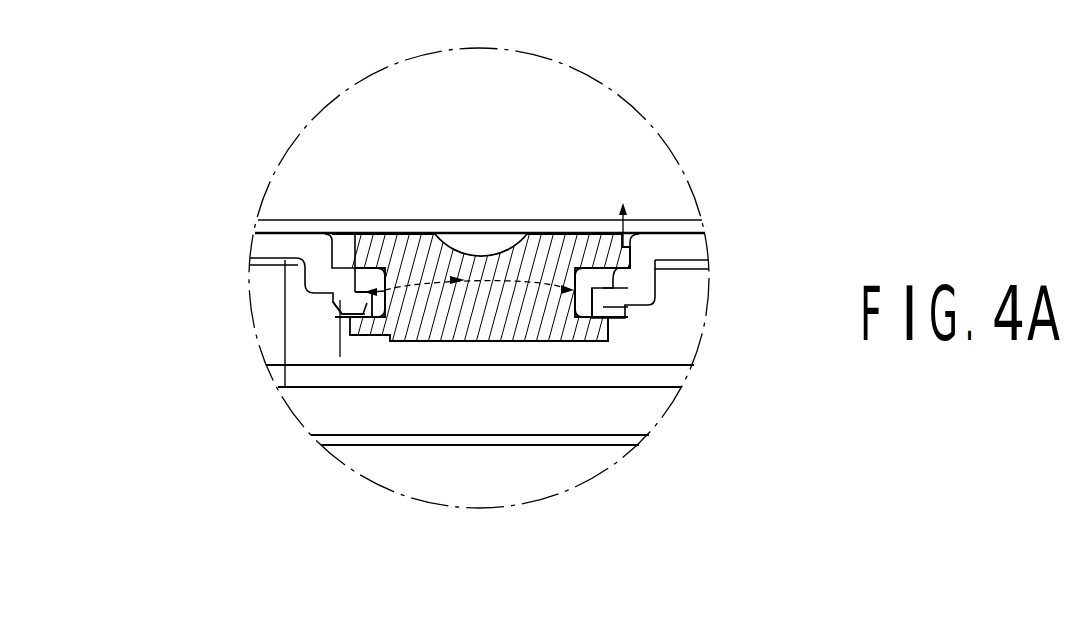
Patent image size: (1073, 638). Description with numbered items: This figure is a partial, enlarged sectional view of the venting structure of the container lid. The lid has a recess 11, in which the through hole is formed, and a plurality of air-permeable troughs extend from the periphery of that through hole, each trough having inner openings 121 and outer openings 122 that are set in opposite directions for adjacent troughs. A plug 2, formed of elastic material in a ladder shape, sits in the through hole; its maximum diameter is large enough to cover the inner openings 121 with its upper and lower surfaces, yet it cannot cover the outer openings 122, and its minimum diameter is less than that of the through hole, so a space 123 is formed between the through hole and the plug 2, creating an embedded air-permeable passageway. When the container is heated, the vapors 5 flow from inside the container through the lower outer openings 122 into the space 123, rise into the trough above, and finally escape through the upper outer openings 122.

The plug 2 is at (562, 247).
The vapors 5 is at (340, 352).
The recess 11 is at (333, 250).
The inner openings 121 is at (364, 276).
The outer openings 122 is at (335, 312).
The space 123 is at (577, 292).